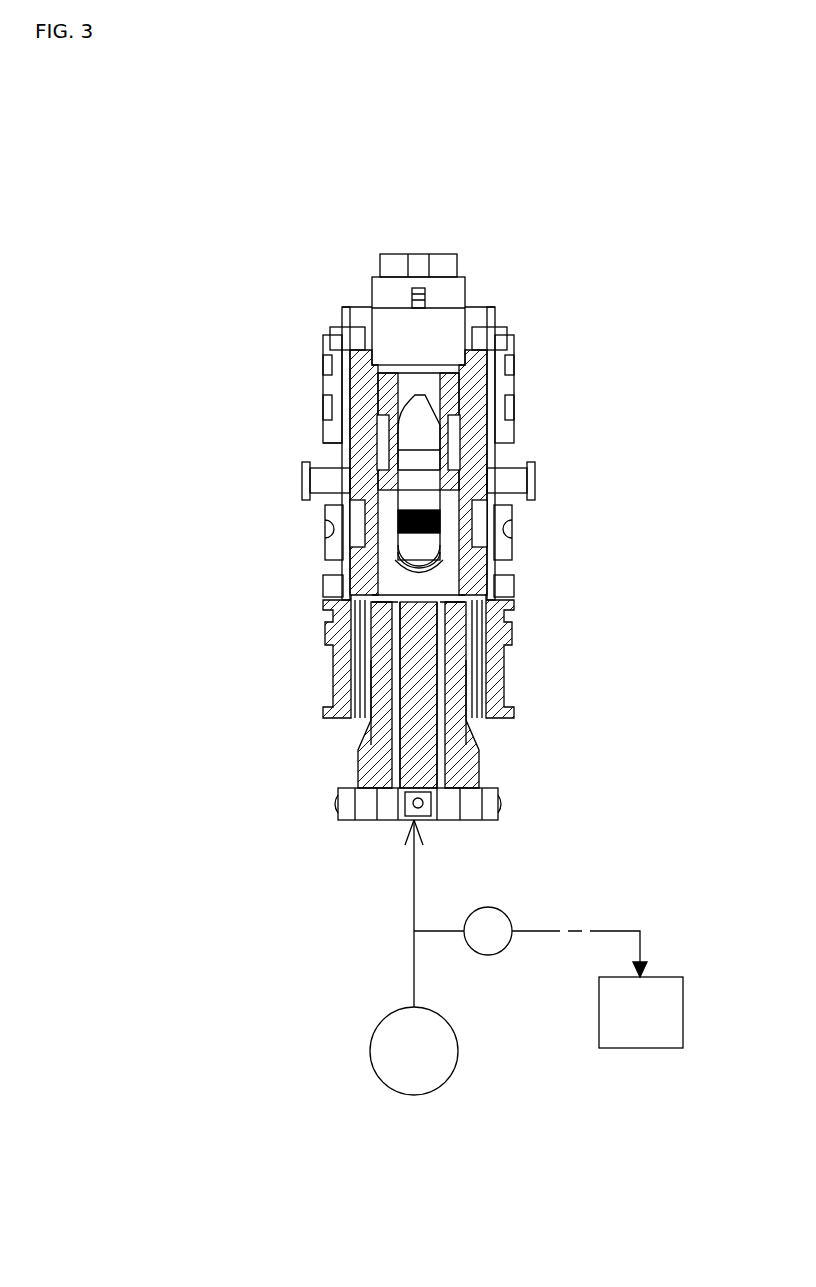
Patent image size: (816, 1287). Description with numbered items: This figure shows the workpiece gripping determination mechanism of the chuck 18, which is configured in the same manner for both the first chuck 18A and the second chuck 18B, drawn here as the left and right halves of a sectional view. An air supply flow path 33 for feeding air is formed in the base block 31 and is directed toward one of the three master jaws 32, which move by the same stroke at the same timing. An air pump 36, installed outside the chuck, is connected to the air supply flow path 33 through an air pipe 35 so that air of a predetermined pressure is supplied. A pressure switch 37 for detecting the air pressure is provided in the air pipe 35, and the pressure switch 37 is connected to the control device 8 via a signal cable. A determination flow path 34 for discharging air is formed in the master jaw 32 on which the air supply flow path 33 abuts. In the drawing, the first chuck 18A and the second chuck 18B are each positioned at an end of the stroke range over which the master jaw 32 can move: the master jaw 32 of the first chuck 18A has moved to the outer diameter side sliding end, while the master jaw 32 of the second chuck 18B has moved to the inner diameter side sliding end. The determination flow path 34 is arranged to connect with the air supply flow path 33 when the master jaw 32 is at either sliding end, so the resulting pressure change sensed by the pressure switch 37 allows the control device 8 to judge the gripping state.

The chuck 18 is at (472, 273).
The first chuck 18A is at (330, 430).
The second chuck 18B is at (497, 437).
The base block 31 is at (360, 733).
The master jaw 32 is at (335, 680).
The air supply flow path 33 is at (358, 782).
The determination flow path 34 is at (335, 655).
The air pipe 35 is at (413, 952).
The air pump 36 is at (390, 1062).
The pressure switch 37 is at (488, 922).
The control device 8 is at (660, 1035).